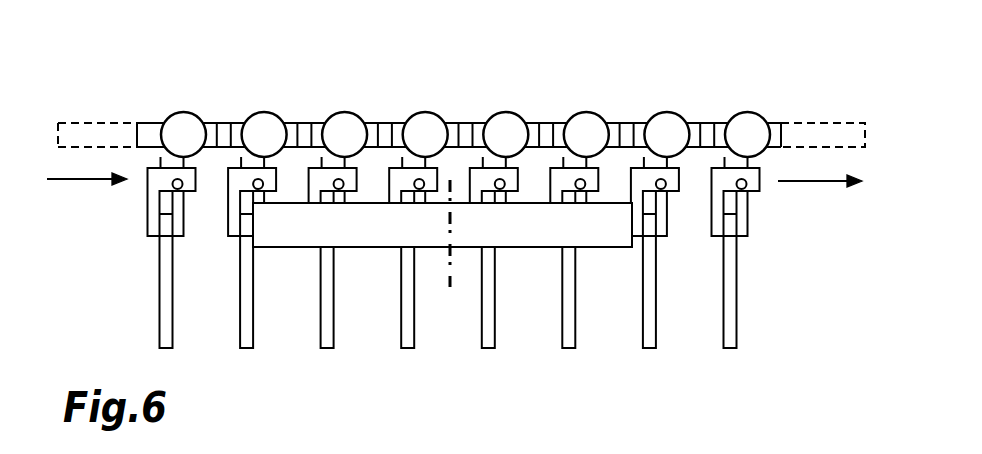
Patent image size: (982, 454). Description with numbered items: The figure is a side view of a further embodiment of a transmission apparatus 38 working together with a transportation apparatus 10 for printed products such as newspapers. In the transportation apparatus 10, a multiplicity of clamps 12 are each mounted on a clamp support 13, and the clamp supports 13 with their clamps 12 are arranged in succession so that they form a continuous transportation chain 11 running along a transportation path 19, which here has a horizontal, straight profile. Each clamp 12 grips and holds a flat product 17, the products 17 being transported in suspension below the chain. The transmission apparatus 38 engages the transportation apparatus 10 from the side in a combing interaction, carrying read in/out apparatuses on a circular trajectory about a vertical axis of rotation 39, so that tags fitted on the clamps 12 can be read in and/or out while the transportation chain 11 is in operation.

The transportation apparatus 10 is at (205, 83).
The transportation chain 11 is at (818, 128).
The clamp 12 is at (408, 175).
The clamp support 13 is at (393, 132).
The flat product 17 is at (408, 332).
The transportation path 19 is at (807, 181).
The transmission apparatus 38 is at (300, 237).
The vertical axis of rotation 39 is at (448, 277).